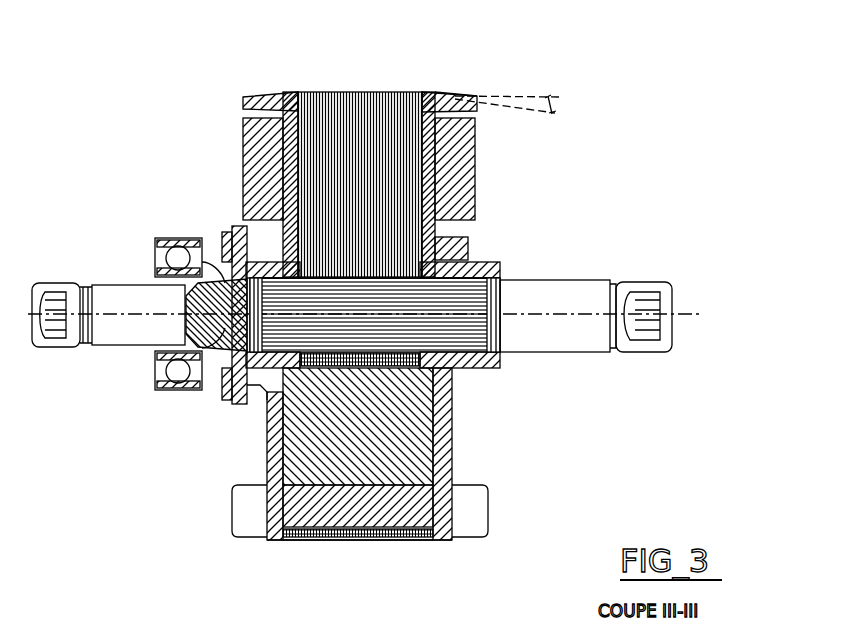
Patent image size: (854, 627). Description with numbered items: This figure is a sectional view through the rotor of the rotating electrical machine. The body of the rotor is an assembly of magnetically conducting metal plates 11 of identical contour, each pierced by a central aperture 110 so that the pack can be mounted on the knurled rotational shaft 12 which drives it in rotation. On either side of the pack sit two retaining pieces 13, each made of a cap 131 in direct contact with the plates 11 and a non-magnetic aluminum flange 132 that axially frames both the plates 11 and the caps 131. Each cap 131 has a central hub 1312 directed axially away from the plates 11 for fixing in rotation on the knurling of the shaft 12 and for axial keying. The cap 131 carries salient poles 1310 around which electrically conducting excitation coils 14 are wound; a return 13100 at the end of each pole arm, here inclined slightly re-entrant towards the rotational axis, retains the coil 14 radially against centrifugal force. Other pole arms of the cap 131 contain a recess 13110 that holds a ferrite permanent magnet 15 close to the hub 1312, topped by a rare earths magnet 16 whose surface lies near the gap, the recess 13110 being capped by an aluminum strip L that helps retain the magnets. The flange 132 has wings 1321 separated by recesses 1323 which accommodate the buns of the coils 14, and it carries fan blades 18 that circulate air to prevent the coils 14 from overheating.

The retaining piece 13 is at (248, 84).
The cap 131 is at (291, 102).
The magnetically conducting metal plate 11 is at (346, 128).
The return 13100 is at (462, 108).
The salient pole 1310 is at (458, 160).
The electrically conducting coil 14 is at (477, 191).
The recess 1323 is at (470, 237).
The hub 1312 is at (470, 372).
The rotational shaft 12 is at (475, 302).
The central aperture 110 is at (405, 292).
The flange 132 is at (275, 432).
The recess 13110 is at (440, 452).
The permanent magnet 15 is at (350, 462).
The rare earths magnet 16 is at (350, 535).
The aluminum strip L is at (387, 537).
The wing 1321 is at (270, 478).
The fan blade 18 is at (480, 513).